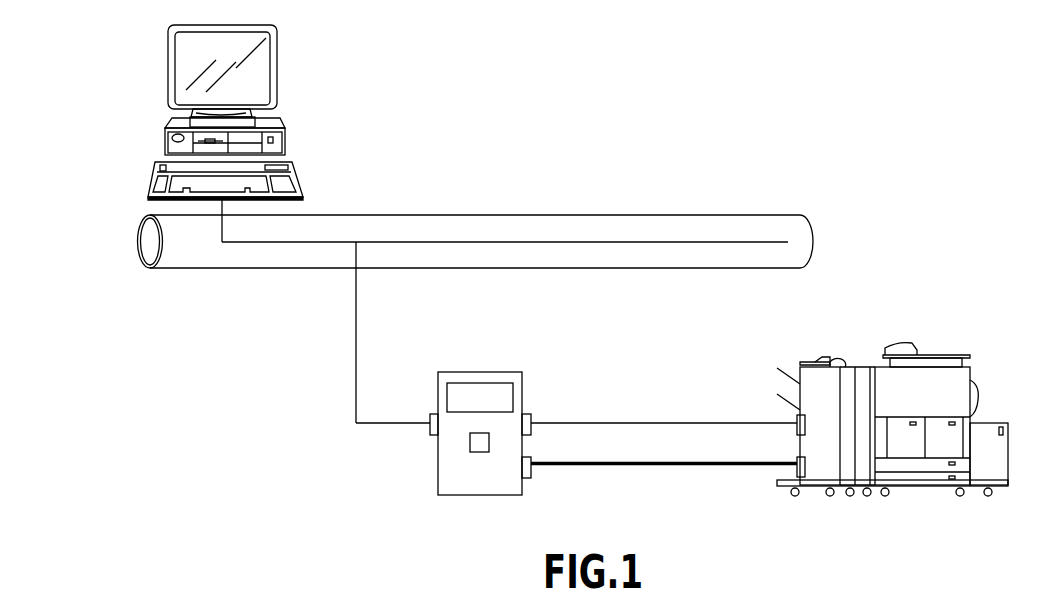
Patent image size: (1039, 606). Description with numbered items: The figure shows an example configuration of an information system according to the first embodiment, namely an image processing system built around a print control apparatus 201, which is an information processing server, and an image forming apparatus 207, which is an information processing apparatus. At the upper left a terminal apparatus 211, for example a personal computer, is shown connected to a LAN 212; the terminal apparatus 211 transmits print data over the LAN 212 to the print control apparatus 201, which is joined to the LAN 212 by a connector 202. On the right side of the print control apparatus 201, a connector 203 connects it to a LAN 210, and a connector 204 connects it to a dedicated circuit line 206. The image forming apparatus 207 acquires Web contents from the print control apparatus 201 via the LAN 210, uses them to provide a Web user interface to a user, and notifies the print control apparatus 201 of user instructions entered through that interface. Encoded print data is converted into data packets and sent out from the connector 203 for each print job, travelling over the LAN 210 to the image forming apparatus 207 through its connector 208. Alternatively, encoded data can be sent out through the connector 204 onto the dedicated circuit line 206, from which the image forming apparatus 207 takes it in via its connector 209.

The print control apparatus 201 is at (481, 372).
The connector 202 is at (429, 428).
The connector 203 is at (532, 418).
The connector 204 is at (532, 471).
The dedicated circuit line 206 is at (666, 466).
The image forming apparatus 207 is at (951, 401).
The connector 208 is at (796, 421).
The connector 209 is at (796, 472).
The LAN 210 is at (670, 422).
The terminal apparatus 211 is at (278, 62).
The LAN 212 is at (740, 215).